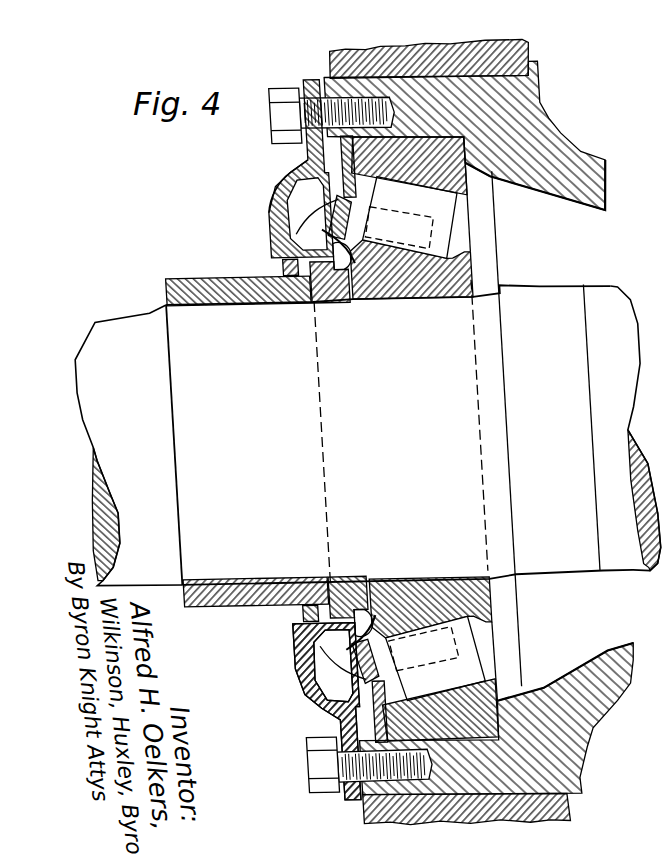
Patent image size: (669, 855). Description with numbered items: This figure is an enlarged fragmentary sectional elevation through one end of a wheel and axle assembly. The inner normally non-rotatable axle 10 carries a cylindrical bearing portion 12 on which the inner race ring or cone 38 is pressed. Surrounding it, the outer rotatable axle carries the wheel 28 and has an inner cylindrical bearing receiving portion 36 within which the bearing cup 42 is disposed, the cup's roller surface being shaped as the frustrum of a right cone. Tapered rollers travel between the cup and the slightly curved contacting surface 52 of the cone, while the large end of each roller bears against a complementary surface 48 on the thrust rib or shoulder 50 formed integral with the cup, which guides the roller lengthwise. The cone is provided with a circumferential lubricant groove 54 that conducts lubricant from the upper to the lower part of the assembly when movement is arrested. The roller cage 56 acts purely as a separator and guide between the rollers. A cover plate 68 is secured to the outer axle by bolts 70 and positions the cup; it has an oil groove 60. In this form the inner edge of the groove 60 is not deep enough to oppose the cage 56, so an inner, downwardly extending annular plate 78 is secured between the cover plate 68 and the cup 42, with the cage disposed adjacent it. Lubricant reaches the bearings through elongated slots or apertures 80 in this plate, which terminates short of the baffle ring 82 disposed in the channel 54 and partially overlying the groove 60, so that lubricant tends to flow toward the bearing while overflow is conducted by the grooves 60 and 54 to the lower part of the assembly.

The inner normally non-rotatable axle 10 is at (620, 570).
The cylindrical bearing portion 12 is at (352, 421).
The wheel 28 is at (514, 56).
The inner cylindrical bearing receiving portion 36 is at (440, 132).
The inner race ring or cone 38 is at (455, 592).
The bearing cup 42 is at (452, 725).
The complementary surface 48 is at (346, 714).
The thrust rib or shoulder 50 is at (315, 731).
The surface contacting the roller 52 is at (454, 613).
The lubricant groove 54 is at (347, 292).
The roller cage 56 is at (352, 661).
The oil groove 60 is at (279, 201).
The cover plate 68 is at (277, 645).
The bolts 70 is at (293, 765).
The annular plate 78 is at (341, 681).
The elongated slots or apertures 80 is at (355, 688).
The baffle ring 82 is at (308, 167).